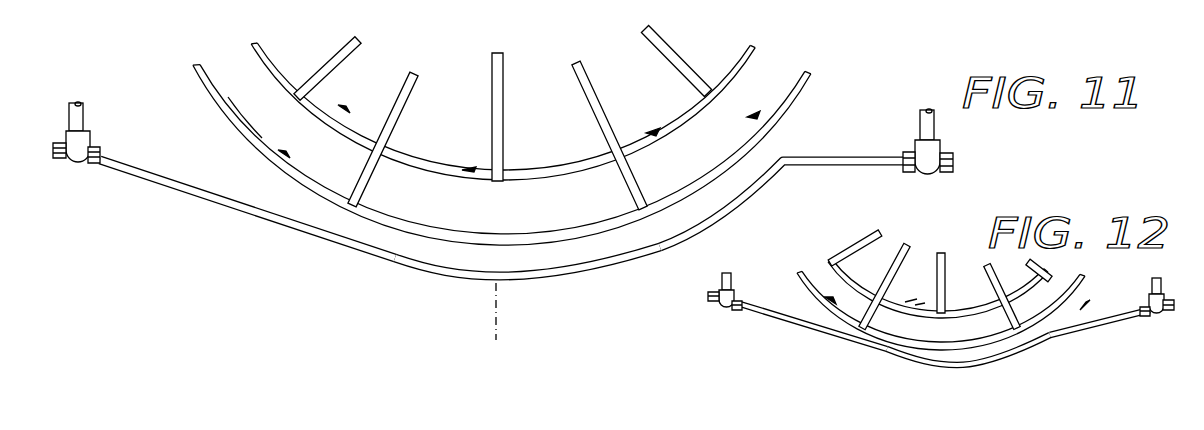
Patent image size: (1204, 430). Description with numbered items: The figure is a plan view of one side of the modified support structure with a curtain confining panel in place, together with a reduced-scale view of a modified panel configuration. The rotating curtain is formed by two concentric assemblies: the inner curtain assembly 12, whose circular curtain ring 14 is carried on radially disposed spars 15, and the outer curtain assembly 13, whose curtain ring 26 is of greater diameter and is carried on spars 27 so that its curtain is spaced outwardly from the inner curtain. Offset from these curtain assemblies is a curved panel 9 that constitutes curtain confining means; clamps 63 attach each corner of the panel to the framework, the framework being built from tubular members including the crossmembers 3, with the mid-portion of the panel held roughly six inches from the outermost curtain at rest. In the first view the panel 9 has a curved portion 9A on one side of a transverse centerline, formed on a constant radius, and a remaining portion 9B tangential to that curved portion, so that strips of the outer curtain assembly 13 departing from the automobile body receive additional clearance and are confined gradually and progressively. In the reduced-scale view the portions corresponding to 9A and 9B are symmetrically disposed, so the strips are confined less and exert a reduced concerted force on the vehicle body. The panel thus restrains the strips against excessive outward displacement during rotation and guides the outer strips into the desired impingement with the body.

In FIG. 11, the crossmembers 3 is at (70, 110).
In FIG. 11, the clamps 63 is at (80, 167).
In FIG. 12, the clamps 63 is at (718, 305).
In FIG. 11, the curved panel 9 is at (467, 278).
In FIG. 12, the curved panel 9 is at (958, 373).
In FIG. 11, the curved portion 9A is at (665, 247).
In FIG. 12, the curved portion 9A is at (1083, 335).
In FIG. 11, the remaining portion 9B is at (248, 219).
In FIG. 12, the remaining portion 9B is at (792, 327).
In FIG. 11, the inner curtain assembly 12 is at (550, 160).
In FIG. 12, the inner curtain assembly 12 is at (1057, 275).
In FIG. 11, the outer curtain assembly 13 is at (520, 233).
In FIG. 12, the outer curtain assembly 13 is at (811, 268).
In FIG. 11, the curtain ring 14 is at (413, 165).
In FIG. 12, the curtain ring 14 is at (852, 279).
In FIG. 11, the spars 15 is at (340, 58).
In FIG. 12, the spars 15 is at (860, 250).
In FIG. 11, the curtain ring 26 is at (400, 222).
In FIG. 12, the curtain ring 26 is at (900, 335).
In FIG. 11, the spars 27 is at (406, 103).
In FIG. 12, the spars 27 is at (903, 262).